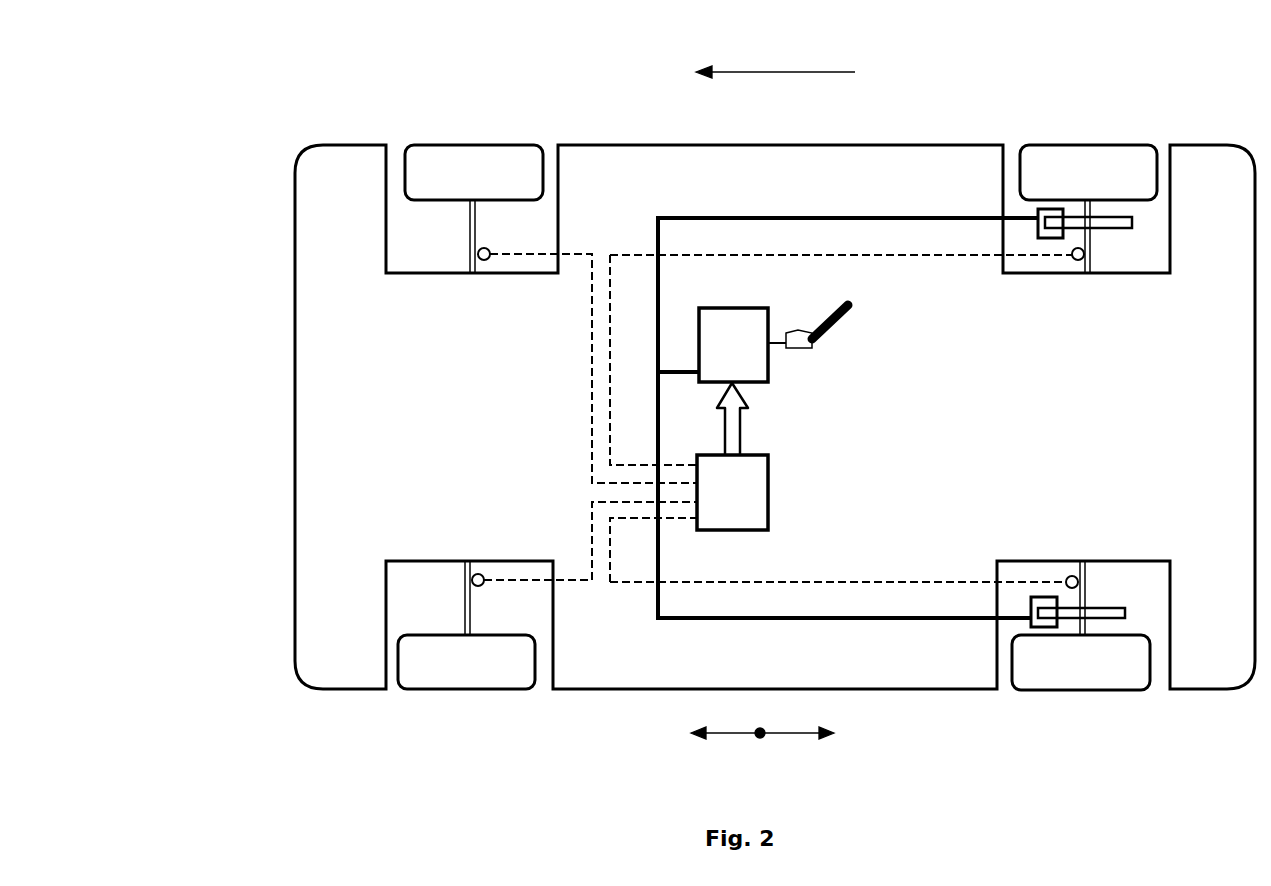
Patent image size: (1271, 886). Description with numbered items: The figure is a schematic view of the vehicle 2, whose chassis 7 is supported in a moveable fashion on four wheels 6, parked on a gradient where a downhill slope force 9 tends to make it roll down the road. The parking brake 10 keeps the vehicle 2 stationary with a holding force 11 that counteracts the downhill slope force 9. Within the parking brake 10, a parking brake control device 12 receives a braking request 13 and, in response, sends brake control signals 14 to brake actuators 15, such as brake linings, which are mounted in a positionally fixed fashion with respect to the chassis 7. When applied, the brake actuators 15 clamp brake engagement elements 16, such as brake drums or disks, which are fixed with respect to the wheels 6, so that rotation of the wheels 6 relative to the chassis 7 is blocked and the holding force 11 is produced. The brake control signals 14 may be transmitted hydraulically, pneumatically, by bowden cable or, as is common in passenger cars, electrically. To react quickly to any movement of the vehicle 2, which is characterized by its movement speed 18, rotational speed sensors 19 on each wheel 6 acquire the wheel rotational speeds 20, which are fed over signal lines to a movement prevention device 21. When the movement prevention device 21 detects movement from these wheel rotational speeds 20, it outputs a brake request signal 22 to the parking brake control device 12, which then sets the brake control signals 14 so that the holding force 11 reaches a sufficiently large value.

The vehicle 2 is at (240, 63).
The wheels 6 is at (445, 145).
The chassis 7 is at (770, 145).
The downhill slope force 9 is at (728, 735).
The parking brake 10 is at (858, 382).
The holding force 11 is at (796, 735).
The parking brake control device 12 is at (733, 308).
The braking request 13 is at (778, 338).
The brake control signals 14 is at (853, 218).
The brake actuators 15 is at (1040, 240).
The brake engagement elements 16 is at (1108, 230).
The movement speed 18 is at (772, 72).
The rotational speed sensors 19 is at (486, 262).
The wheel rotational speeds 20 is at (572, 256).
The movement prevention device 21 is at (768, 472).
The brake request signal 22 is at (740, 425).